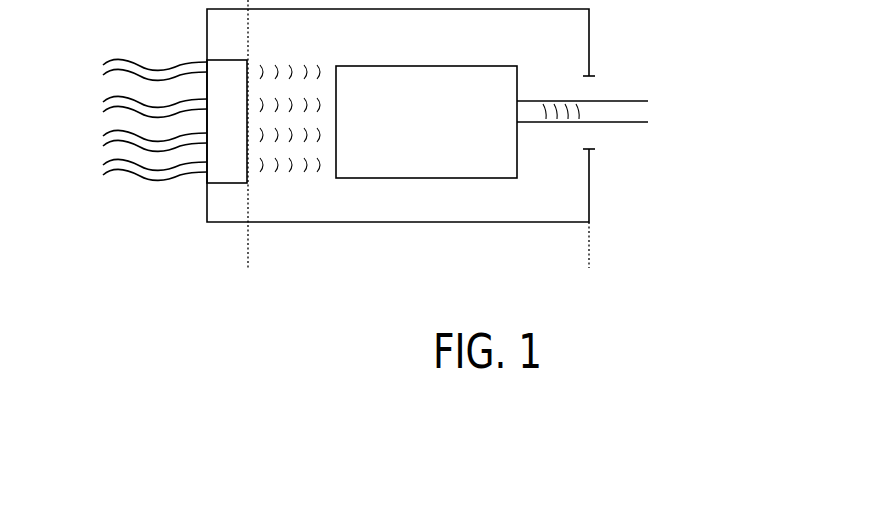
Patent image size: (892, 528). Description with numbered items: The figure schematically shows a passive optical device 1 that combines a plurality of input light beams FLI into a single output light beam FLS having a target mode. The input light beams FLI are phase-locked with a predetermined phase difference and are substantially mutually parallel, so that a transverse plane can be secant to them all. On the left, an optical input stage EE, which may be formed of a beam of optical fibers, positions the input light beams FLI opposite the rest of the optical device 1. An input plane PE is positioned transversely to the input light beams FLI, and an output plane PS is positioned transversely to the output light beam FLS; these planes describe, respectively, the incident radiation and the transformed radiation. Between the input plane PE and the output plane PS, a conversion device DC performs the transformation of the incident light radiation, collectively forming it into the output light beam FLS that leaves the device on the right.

The passive optical device 1 is at (399, 222).
The optical input stage EE is at (205, 180).
The input plane PE is at (247, 152).
The output plane PS is at (592, 263).
The conversion device DC is at (426, 122).
The output light beam FLS is at (643, 100).
The input light beams FLI is at (108, 177).